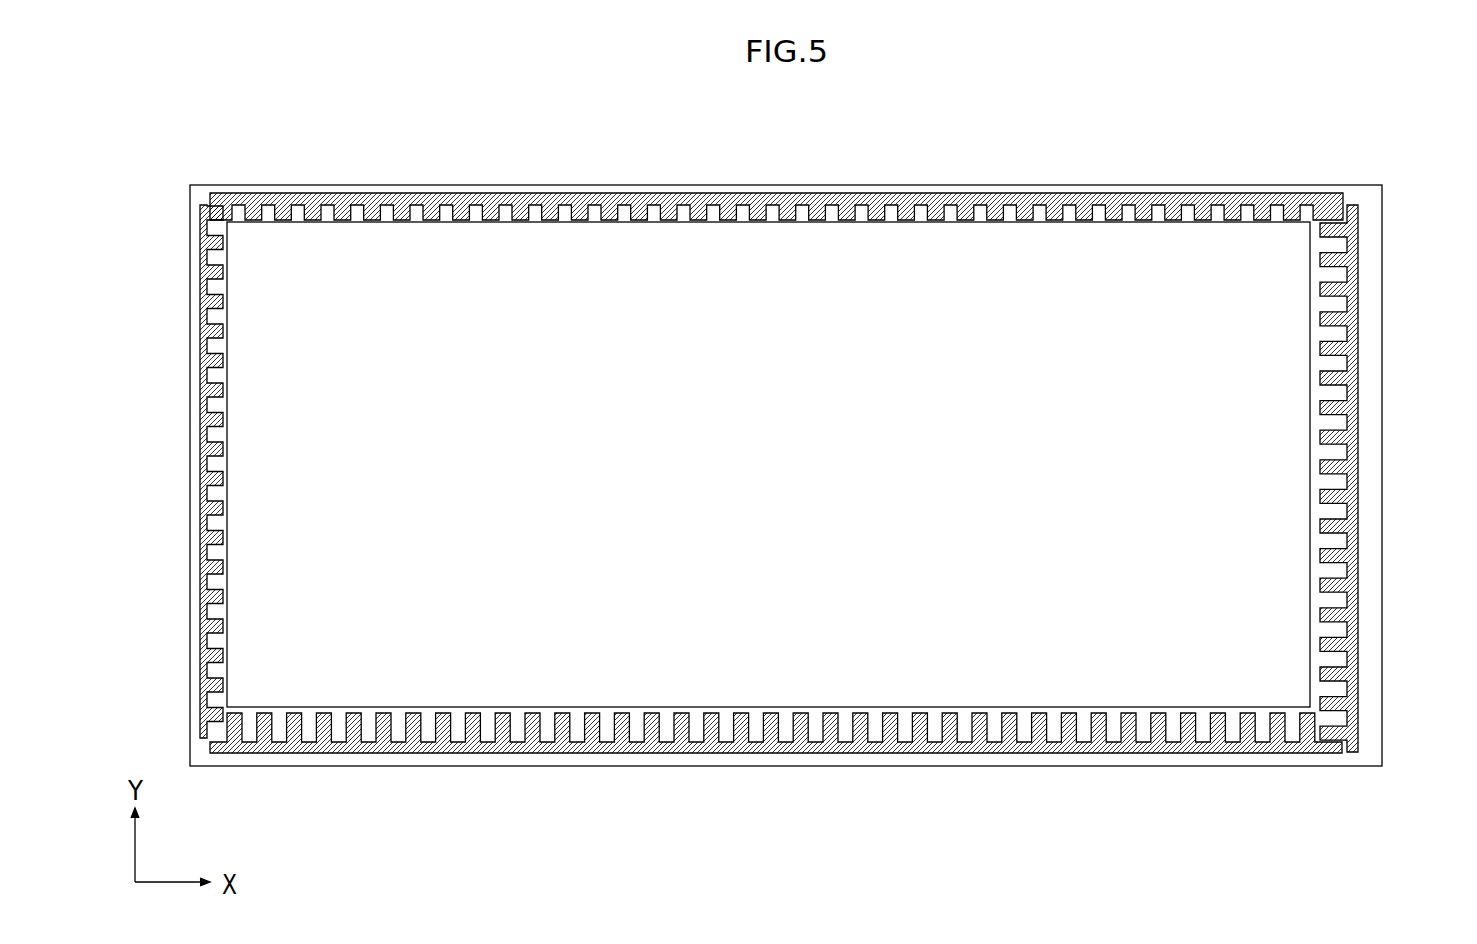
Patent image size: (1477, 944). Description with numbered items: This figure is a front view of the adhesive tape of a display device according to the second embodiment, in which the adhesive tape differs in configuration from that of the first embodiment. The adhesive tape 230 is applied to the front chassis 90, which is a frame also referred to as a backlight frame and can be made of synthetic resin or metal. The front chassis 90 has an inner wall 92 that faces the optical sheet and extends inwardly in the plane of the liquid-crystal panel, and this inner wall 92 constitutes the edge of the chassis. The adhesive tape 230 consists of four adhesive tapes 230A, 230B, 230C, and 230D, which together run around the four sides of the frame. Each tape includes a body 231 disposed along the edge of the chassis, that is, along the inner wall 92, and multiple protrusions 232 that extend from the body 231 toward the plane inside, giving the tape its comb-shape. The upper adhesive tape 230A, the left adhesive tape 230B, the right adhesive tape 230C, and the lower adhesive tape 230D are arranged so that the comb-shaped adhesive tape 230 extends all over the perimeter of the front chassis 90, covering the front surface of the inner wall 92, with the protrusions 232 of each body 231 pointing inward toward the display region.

The inner wall 92 is at (952, 757).
The front chassis 90 is at (786, 518).
The adhesive tape 230 is at (784, 487).
The adhesive tape 230A is at (1045, 207).
The adhesive tape 230B is at (210, 573).
The adhesive tape 230C is at (1354, 568).
The adhesive tape 230D is at (758, 745).
The body 231 is at (622, 203).
The protrusions 232 is at (594, 216).